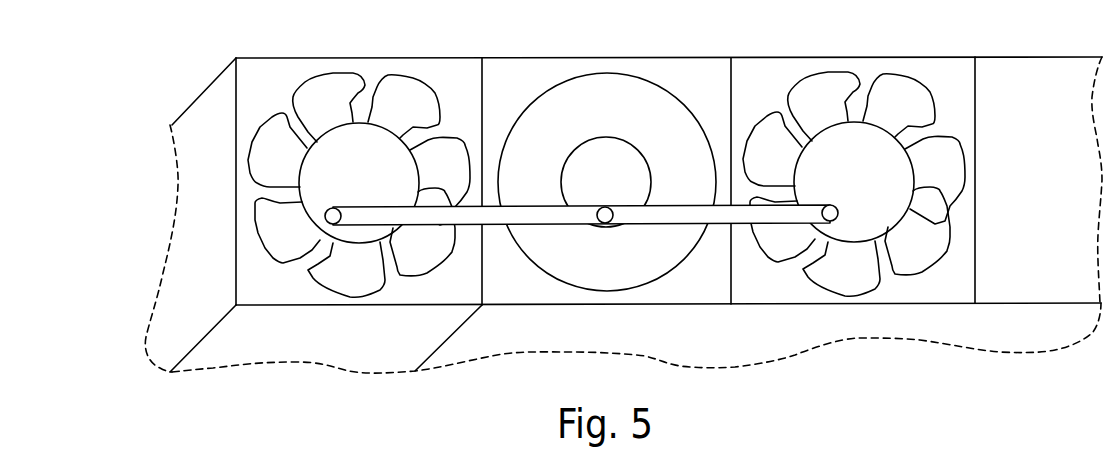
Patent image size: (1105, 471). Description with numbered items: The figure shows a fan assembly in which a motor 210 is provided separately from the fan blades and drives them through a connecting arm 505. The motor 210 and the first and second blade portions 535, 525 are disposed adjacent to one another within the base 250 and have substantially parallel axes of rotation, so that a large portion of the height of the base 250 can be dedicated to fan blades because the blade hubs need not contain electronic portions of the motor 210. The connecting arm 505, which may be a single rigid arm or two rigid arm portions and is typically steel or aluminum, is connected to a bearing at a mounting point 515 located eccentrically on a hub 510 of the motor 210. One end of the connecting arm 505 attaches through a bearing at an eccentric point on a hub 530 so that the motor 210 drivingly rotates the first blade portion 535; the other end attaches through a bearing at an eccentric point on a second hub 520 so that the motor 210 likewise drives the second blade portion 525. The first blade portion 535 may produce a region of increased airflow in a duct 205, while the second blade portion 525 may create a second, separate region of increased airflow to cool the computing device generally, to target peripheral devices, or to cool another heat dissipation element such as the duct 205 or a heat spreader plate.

The duct 205 is at (458, 333).
The motor 210 is at (626, 279).
The base 250 is at (860, 56).
The connecting arm 505 is at (683, 205).
The hub 510 is at (605, 137).
The mounting point 515 is at (612, 218).
The second hub 520 is at (854, 187).
The second blade portion 525 is at (925, 242).
The hub 530 is at (359, 187).
The first blade portion 535 is at (435, 252).